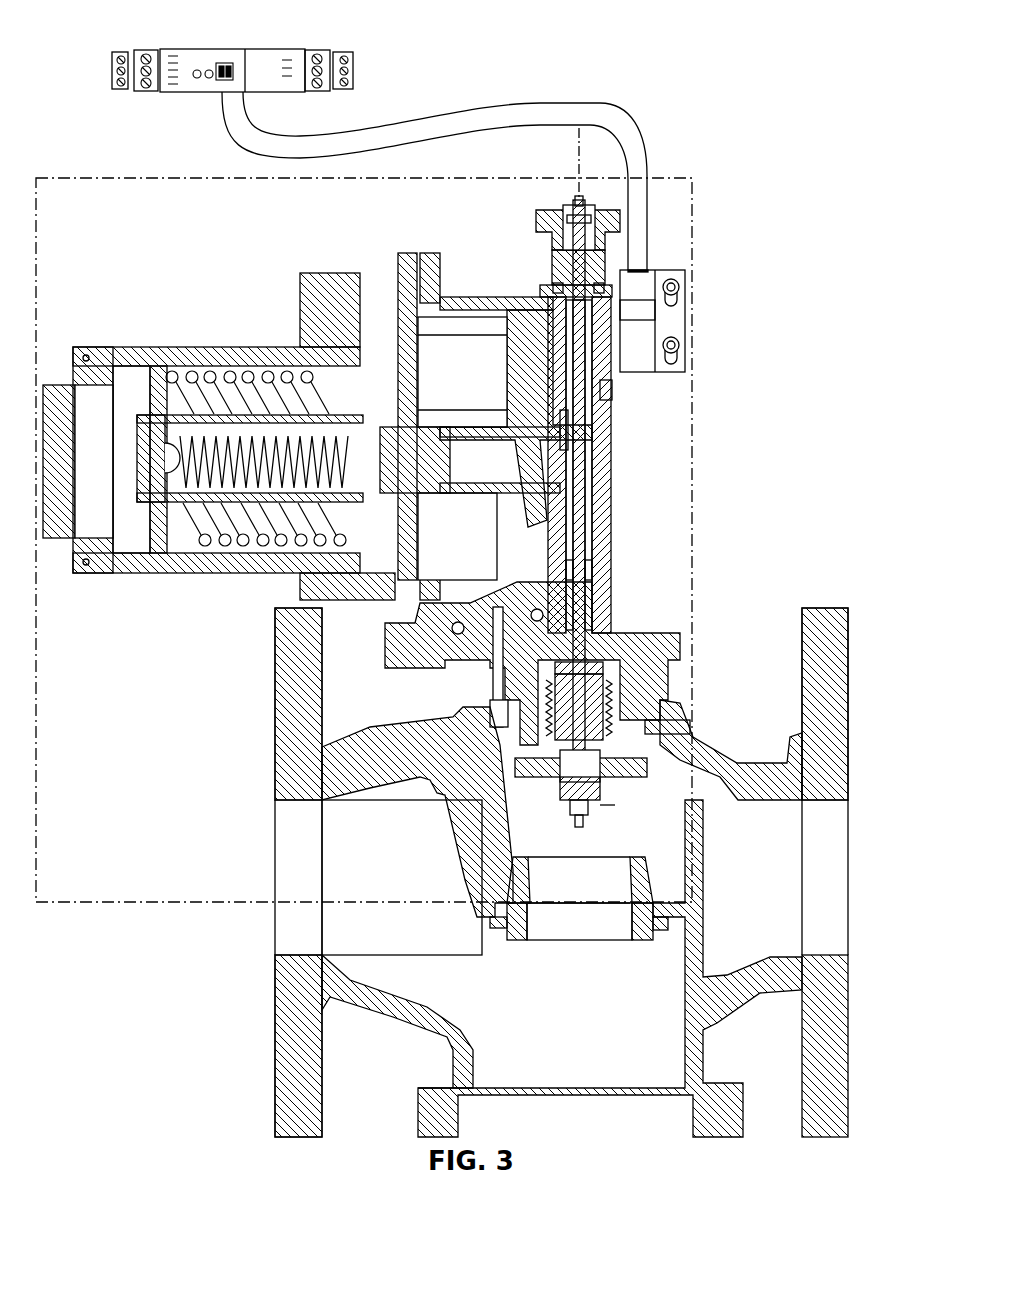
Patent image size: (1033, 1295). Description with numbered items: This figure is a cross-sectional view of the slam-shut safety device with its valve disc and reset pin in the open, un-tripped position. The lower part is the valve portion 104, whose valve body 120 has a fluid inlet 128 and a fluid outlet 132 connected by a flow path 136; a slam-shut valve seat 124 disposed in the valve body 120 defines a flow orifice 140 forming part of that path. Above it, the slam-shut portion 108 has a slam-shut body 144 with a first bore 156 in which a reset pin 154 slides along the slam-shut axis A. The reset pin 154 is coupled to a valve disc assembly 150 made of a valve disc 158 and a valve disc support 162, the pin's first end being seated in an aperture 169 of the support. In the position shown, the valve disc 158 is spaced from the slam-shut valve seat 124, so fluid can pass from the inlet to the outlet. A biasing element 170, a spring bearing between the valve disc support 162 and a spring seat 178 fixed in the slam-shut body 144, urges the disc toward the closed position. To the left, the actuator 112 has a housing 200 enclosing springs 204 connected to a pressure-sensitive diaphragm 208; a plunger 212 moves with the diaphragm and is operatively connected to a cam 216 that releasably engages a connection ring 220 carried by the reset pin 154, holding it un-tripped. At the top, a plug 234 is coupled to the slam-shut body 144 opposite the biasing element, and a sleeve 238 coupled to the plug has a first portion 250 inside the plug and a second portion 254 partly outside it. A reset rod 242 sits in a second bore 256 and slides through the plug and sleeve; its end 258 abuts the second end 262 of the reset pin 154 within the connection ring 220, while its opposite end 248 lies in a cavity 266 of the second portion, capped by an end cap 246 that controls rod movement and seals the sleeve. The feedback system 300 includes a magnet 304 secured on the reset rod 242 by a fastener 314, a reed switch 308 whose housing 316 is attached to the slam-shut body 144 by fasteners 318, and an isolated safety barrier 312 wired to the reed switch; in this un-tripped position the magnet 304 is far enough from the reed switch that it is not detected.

The isolated safety barrier 312 is at (133, 42).
The slam-shut axis A is at (583, 150).
The magnet 304 is at (562, 210).
The end cap 246 is at (588, 212).
The end of the reset rod 248 is at (647, 172).
The sleeve 238 is at (675, 215).
The second portion of the sleeve 254 is at (613, 210).
The fastener 314 is at (610, 232).
The plug 234 is at (612, 288).
The housing of the reed switch 316 is at (688, 272).
The fasteners 318 is at (686, 287).
The reed switch 308 is at (700, 326).
The feedback system 300 is at (702, 324).
The diaphragm 208 is at (368, 280).
The housing 200 is at (252, 433).
The springs 204 is at (192, 372).
The actuator 112 is at (204, 335).
The first portion of the sleeve 250 is at (545, 290).
The cavity 266 is at (572, 290).
The cam 216 is at (493, 420).
The plunger 212 is at (450, 493).
The reset rod 242 is at (630, 390).
The second bore 256 is at (620, 418).
The connection ring 220 is at (615, 470).
The slam-shut portion 108 is at (645, 505).
The end of the reset rod 258 is at (696, 530).
The second end of the reset pin 262 is at (612, 525).
The reset pin 154 is at (612, 548).
The first bore 156 is at (614, 572).
The slam-shut body 144 is at (615, 605).
The spring seat 178 is at (605, 668).
The biasing element 170 is at (615, 692).
The valve disc support 162 is at (724, 722).
The aperture 169 is at (645, 738).
The valve disc 158 is at (620, 775).
The valve disc assembly 150 is at (638, 790).
The valve portion 104 is at (265, 690).
The valve body 120 is at (275, 783).
The fluid outlet 132 is at (275, 930).
The flow path 136 is at (460, 954).
The flow orifice 140 is at (593, 890).
The slam-shut valve seat 124 is at (640, 905).
The fluid inlet 128 is at (802, 894).